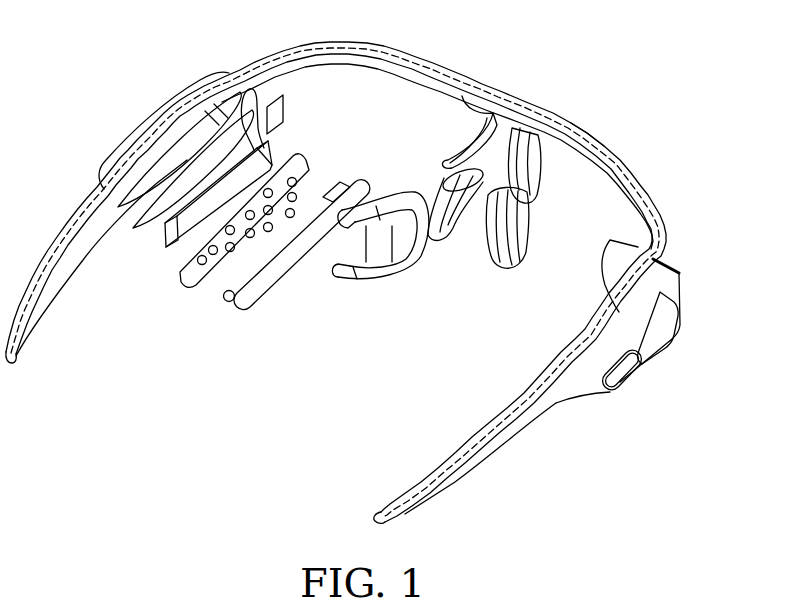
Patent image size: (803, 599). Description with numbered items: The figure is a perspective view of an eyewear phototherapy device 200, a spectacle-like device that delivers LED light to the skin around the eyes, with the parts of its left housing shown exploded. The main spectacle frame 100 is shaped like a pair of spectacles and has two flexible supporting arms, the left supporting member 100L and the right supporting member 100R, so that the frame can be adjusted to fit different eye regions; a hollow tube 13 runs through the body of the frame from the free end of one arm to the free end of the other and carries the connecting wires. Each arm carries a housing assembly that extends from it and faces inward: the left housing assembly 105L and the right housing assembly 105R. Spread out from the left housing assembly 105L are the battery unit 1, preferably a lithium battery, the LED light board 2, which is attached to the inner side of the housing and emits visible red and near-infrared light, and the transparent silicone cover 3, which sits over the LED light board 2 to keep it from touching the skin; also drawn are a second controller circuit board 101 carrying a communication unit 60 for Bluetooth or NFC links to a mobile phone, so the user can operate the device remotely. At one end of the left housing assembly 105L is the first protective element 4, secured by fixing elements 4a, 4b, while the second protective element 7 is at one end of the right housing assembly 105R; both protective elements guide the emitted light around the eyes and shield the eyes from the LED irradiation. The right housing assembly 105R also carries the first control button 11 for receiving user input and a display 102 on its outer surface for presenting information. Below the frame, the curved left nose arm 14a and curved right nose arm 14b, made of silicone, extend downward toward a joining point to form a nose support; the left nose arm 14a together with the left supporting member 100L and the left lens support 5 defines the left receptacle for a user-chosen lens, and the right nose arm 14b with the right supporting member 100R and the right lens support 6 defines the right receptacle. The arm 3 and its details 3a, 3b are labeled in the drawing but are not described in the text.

The main spectacle frame 100 is at (357, 47).
The left supporting member 100L is at (10, 364).
The right supporting member 100R is at (380, 523).
The hollow tube 13 is at (585, 137).
The eyewear phototherapy device 200 is at (568, 40).
The left housing assembly 105L is at (177, 120).
The right housing assembly 105R is at (670, 295).
The second controller circuit board 101 is at (182, 182).
The battery unit 1 is at (227, 180).
The communication unit 60 is at (279, 96).
The LED light board 2 is at (185, 273).
The transparent silicone cover 3 is at (260, 293).
The arm pivot 3a is at (230, 297).
The arm tab 3b is at (337, 187).
The first protective element 4 is at (378, 270).
The fixing element 4a is at (373, 213).
The fixing element 4b is at (347, 270).
The left lens support 5 is at (443, 227).
The curved left nose arm 14a is at (470, 128).
The curved right nose arm 14b is at (537, 177).
The right lens support 6 is at (520, 250).
The second protective element 7 is at (603, 276).
The display 102 is at (667, 325).
The first control button 11 is at (627, 370).